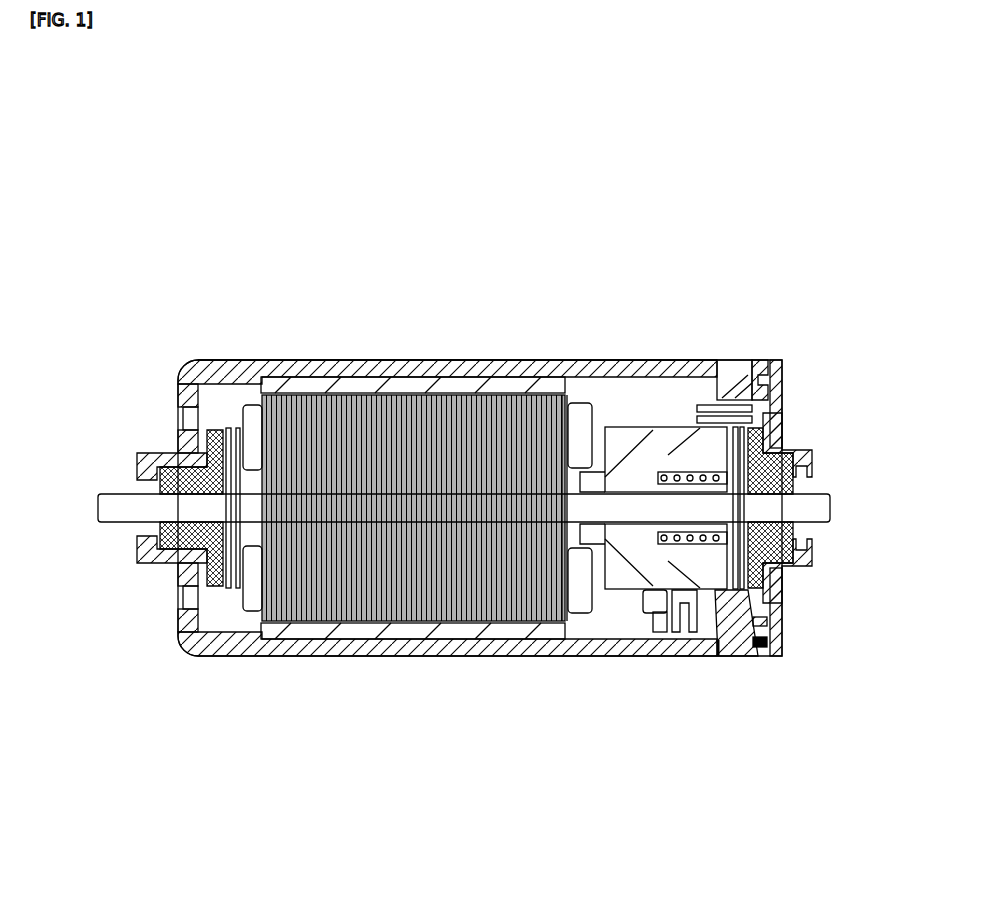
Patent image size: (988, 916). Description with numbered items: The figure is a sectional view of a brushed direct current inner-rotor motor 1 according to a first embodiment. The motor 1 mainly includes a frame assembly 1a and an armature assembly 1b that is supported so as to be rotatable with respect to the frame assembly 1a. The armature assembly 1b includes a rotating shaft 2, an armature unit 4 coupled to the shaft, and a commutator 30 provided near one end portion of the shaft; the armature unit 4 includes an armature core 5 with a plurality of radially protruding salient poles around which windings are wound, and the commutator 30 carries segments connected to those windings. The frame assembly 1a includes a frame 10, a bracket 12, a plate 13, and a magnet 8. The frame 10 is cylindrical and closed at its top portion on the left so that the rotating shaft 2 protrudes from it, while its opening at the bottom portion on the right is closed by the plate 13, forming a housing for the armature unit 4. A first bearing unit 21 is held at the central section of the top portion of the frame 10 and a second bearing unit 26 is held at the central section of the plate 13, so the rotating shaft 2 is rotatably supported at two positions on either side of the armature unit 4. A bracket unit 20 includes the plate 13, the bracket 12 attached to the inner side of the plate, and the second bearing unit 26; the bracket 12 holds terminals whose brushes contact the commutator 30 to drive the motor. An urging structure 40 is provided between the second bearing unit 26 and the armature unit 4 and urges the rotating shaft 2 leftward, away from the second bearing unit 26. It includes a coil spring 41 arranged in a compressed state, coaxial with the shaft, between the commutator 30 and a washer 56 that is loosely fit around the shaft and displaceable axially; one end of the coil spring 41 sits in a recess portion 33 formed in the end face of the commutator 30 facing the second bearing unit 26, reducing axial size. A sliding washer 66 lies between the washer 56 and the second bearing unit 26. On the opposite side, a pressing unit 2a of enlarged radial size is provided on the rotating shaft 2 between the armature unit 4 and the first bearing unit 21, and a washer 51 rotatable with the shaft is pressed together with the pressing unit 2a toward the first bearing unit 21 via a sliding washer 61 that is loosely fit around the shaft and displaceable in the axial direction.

The inner-rotor motor 1 is at (197, 178).
The frame assembly 1a is at (375, 362).
The armature assembly 1b is at (133, 538).
The rotating shaft 2 is at (114, 494).
The pressing unit 2a is at (245, 572).
The armature unit 4 is at (247, 398).
The armature core 5 is at (310, 388).
The magnet 8 is at (523, 378).
The frame 10 is at (367, 649).
The bracket 12 is at (737, 376).
The plate 13 is at (813, 460).
The bracket unit 20 is at (787, 393).
The first bearing unit 21 is at (190, 543).
The second bearing unit 26 is at (813, 550).
The commutator 30 is at (622, 600).
The recess portion 33 is at (665, 470).
The urging structure 40 is at (787, 748).
The coil spring 41 is at (735, 592).
The washer 51 is at (238, 578).
The washer 56 is at (745, 590).
The sliding washer 61 is at (212, 578).
The sliding washer 66 is at (778, 641).